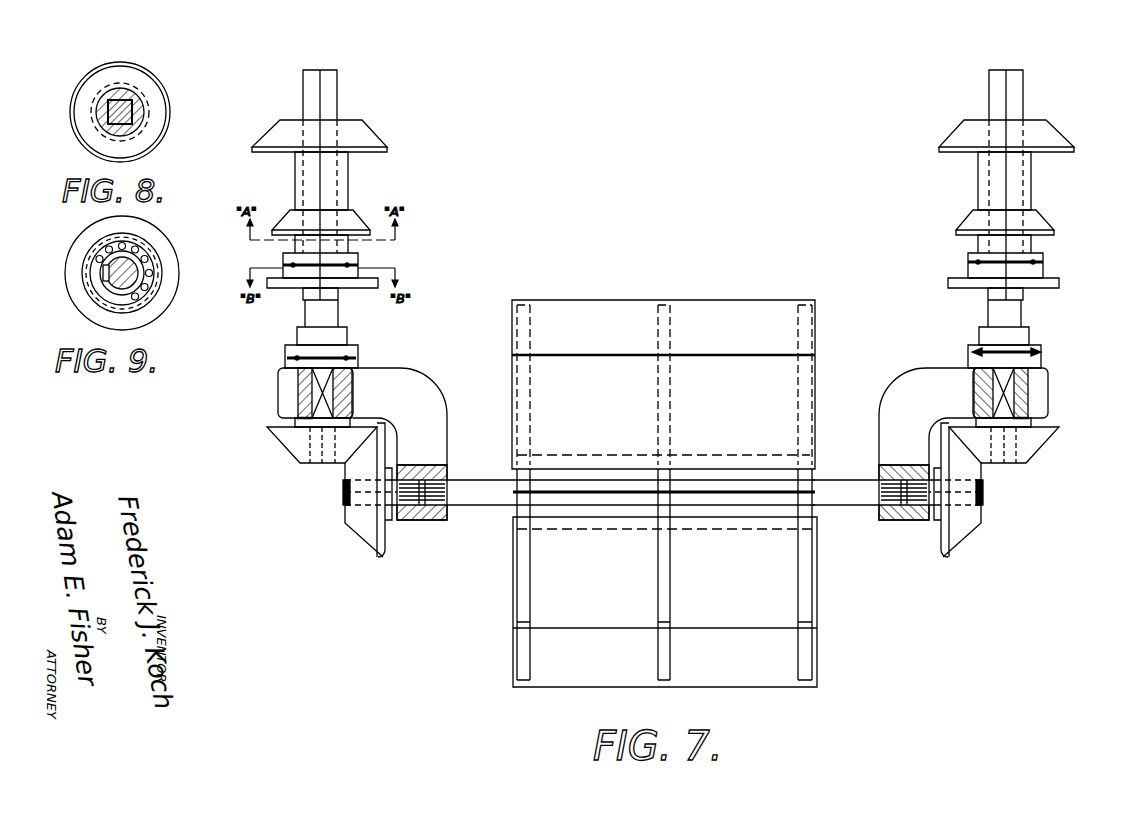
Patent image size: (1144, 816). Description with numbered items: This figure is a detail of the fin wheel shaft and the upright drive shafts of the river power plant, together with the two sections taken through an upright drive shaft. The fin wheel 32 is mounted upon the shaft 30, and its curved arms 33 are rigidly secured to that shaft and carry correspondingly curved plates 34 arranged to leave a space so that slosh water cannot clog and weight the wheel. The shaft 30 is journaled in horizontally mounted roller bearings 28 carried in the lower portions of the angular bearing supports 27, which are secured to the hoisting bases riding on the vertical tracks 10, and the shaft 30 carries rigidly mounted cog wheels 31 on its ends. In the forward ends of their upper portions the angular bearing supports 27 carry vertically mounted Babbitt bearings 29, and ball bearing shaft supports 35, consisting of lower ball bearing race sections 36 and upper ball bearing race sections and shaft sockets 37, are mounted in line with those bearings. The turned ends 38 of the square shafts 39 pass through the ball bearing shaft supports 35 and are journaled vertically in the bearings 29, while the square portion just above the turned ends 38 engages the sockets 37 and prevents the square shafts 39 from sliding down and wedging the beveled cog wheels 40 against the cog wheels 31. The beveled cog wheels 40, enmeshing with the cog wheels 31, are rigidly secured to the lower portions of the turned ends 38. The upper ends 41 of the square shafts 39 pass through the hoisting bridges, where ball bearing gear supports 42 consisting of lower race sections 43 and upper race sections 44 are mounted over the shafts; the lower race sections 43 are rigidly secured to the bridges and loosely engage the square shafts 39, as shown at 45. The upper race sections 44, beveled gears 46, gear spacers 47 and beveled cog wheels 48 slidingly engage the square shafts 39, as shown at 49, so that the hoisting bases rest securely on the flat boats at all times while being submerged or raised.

In FIG. 7, the tracks 10 is at (745, 505).
In FIG. 7, the angular bearing supports 27 is at (418, 400).
In FIG. 7, the roller bearings 28 is at (422, 519).
In FIG. 7, the Babbitt bearings 29 is at (318, 392).
In FIG. 7, the shaft 30 is at (848, 491).
In FIG. 7, the cog wheels 31 is at (363, 529).
In FIG. 7, the fin wheel 32 is at (500, 631).
In FIG. 7, the arms 33 is at (663, 547).
In FIG. 7, the plates 34 is at (717, 313).
In FIG. 7, the ball bearing shaft supports 35 is at (285, 358).
In FIG. 7, the lower ball bearing race sections 36 is at (352, 369).
In FIG. 7, the upper ball bearing race sections and shaft sockets 37 is at (333, 349).
In FIG. 7, the turned ends 38 is at (297, 419).
In FIG. 7, the square shafts 39 is at (328, 87).
In FIG. 7, the beveled cog wheels 40 is at (297, 448).
In FIG. 7, the upper ends 41 is at (330, 108).
In FIG. 7, the ball bearing gear supports 42 is at (367, 261).
In FIG. 9, the lower race sections 43 is at (156, 292).
In FIG. 7, the lower race sections 43 is at (950, 281).
In FIG. 7, the upper race sections 44 is at (968, 254).
In FIG. 9, the loose engagement 45 is at (105, 279).
In FIG. 8, the beveled gears 46 is at (160, 122).
In FIG. 7, the beveled gears 46 is at (350, 220).
In FIG. 7, the gear spacers 47 is at (342, 173).
In FIG. 7, the beveled cog wheels 48 is at (367, 135).
In FIG. 8, the sliding engagement 49 is at (136, 118).